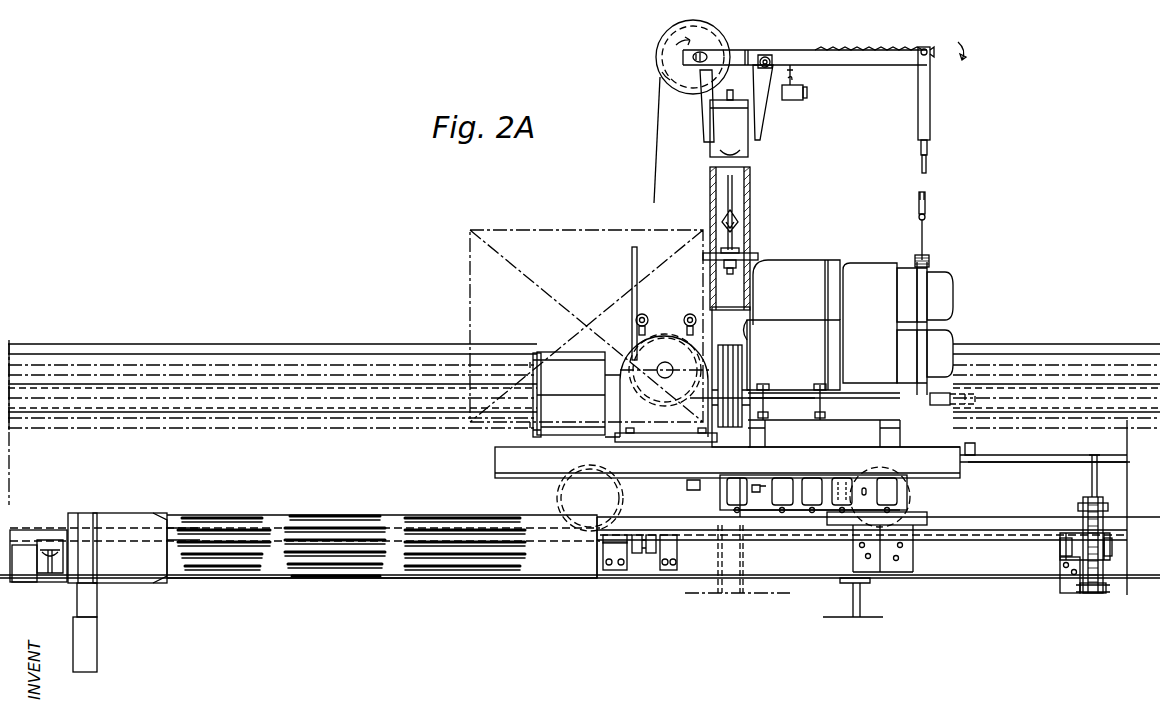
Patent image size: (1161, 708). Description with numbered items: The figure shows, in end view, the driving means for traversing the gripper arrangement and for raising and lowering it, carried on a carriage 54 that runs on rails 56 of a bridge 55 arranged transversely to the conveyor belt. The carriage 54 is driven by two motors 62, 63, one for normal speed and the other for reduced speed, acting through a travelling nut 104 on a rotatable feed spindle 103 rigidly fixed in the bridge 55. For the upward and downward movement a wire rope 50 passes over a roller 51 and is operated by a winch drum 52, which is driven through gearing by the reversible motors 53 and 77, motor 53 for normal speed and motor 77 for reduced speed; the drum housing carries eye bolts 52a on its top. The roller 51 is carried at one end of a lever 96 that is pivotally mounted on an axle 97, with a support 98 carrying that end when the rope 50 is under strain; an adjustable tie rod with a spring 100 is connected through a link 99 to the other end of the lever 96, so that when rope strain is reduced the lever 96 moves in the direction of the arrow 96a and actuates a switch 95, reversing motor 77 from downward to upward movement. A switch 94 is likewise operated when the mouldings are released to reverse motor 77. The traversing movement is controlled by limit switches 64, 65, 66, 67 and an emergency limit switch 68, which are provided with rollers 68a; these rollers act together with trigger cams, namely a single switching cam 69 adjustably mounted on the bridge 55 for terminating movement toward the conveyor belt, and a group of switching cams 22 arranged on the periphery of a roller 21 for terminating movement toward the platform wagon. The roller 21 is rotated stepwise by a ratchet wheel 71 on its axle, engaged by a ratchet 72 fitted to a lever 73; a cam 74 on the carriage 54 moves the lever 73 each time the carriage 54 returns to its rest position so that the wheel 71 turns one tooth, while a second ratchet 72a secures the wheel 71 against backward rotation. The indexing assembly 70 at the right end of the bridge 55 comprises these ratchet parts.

The roller 21 is at (272, 518).
The switching cams 22 is at (414, 516).
The wire rope 50 is at (656, 166).
The roller 51 is at (662, 50).
The winch drum 52 is at (642, 345).
The eye bolts 52a is at (658, 320).
The motor 53 is at (812, 352).
The carriage 54 is at (478, 470).
The bridge 55 is at (224, 340).
The rails 56 is at (40, 530).
The motor 62 is at (795, 268).
The motor 63 is at (905, 278).
The limit switch 64 is at (730, 490).
The limit switch 65 is at (762, 478).
The limit switch 66 is at (892, 492).
The limit switch 67 is at (840, 480).
The limit switch 68 is at (815, 480).
The rollers 68a is at (812, 514).
The switching cam 69 is at (840, 522).
The rack and pinion drive 70 is at (1068, 510).
The ratchet wheel 71 is at (1094, 594).
The ratchet 72 is at (1104, 510).
The second ratchet 72a is at (1085, 593).
The lever 73 is at (1099, 490).
The cam 74 is at (1115, 455).
The motor 77 is at (905, 344).
The switch 94 is at (778, 110).
The switch 95 is at (806, 93).
The lever 96 is at (872, 62).
The arrow 96a is at (965, 62).
The axle 97 is at (766, 57).
The support 98 is at (704, 80).
The lever 99 is at (928, 104).
The spring 100 is at (930, 262).
The feed spindle 103 is at (290, 388).
The travelling nut 104 is at (568, 378).